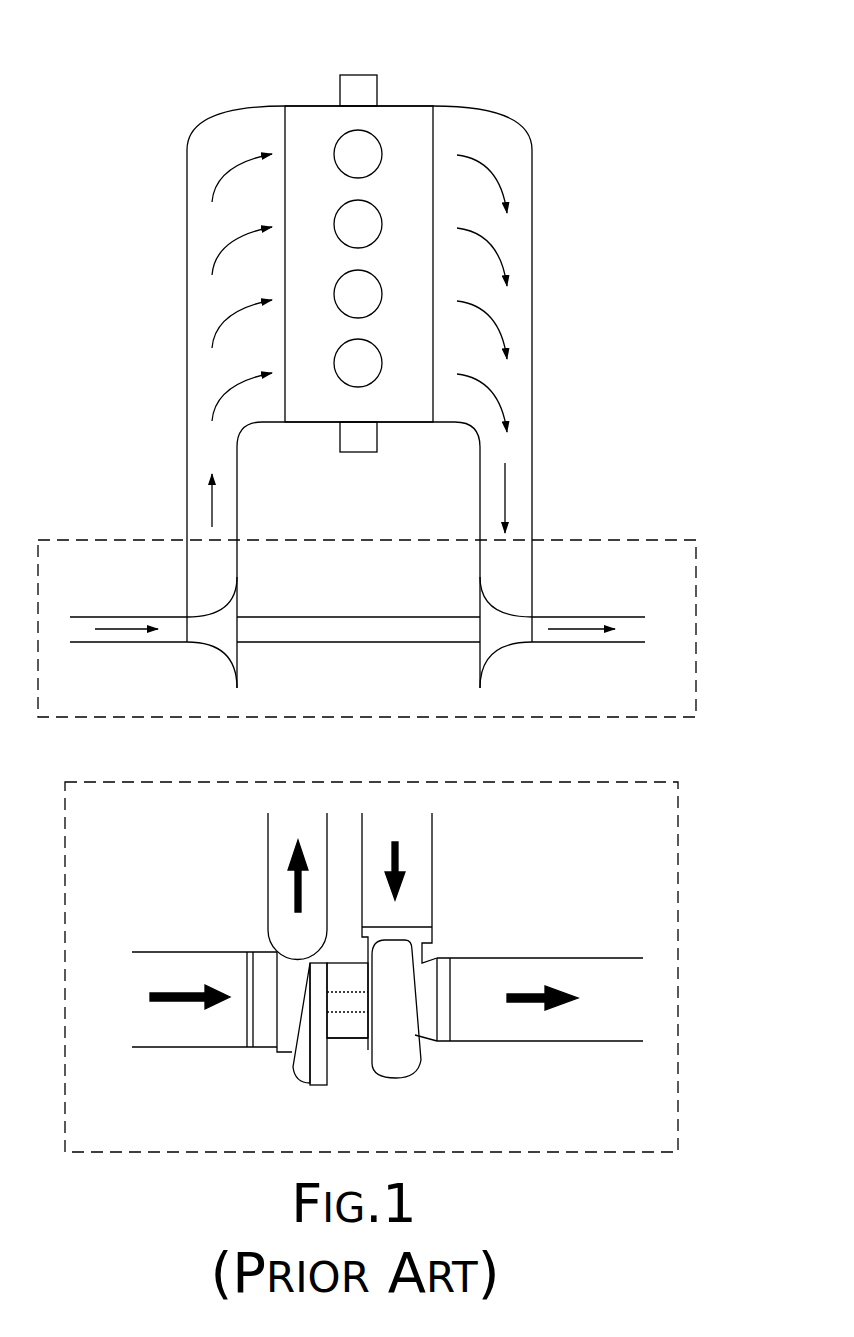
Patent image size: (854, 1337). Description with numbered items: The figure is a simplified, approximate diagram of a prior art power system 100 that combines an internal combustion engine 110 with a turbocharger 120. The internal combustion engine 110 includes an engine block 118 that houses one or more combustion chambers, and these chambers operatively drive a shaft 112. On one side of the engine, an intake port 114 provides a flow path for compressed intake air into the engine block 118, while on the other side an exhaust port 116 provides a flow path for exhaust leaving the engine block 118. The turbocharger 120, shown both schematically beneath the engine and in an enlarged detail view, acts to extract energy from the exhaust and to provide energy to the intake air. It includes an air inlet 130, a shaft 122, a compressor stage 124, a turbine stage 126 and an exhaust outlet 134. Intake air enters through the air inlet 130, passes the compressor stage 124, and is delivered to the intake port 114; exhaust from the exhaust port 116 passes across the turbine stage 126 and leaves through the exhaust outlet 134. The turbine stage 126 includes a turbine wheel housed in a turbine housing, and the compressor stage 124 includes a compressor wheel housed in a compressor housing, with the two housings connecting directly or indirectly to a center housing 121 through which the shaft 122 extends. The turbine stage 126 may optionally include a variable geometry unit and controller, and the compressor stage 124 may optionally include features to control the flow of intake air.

The power system 100 is at (524, 32).
The internal combustion engine 110 is at (322, 106).
The shaft 112 is at (359, 75).
The intake port 114 is at (187, 467).
The exhaust port 116 is at (532, 467).
The engine block 118 is at (378, 416).
The turbocharger 120 is at (590, 540).
The center housing 121 is at (352, 1038).
The shaft 122 is at (357, 642).
The compressor stage 124 is at (237, 590).
The turbine stage 126 is at (480, 593).
The air inlet 130 is at (148, 617).
The exhaust outlet 134 is at (588, 617).